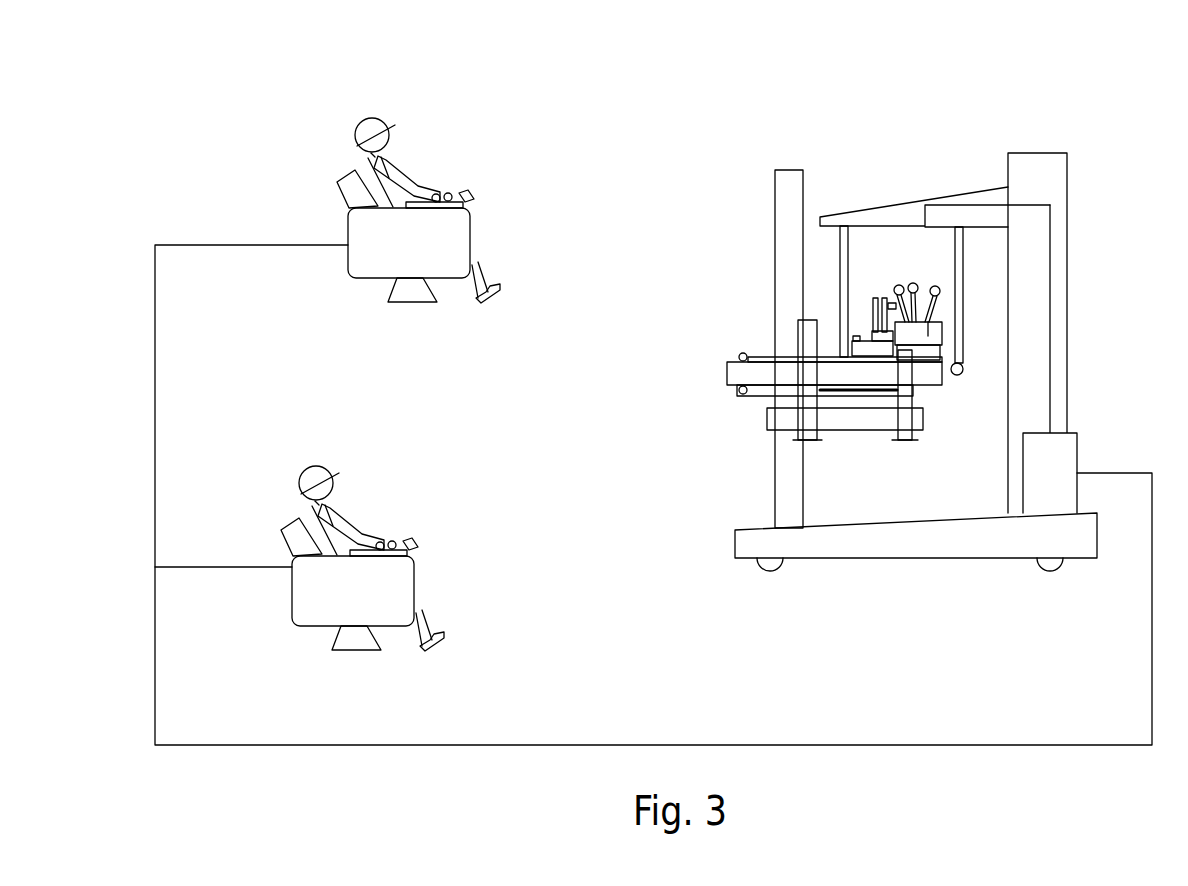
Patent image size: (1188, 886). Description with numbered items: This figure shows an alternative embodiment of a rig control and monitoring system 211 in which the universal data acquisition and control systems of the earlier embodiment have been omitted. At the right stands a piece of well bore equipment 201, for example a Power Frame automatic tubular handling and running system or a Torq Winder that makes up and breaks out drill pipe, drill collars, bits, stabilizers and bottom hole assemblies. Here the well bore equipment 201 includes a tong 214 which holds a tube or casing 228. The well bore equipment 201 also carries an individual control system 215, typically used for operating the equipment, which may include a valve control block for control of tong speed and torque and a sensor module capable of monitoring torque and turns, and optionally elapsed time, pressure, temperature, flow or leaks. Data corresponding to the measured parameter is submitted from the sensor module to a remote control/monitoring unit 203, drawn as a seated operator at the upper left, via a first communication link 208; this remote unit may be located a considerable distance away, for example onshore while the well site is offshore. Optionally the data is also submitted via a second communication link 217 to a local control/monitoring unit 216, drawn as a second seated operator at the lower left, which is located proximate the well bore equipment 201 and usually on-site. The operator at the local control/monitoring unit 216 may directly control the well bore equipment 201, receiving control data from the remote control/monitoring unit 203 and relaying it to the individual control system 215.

The rig control and monitoring system 211 is at (866, 62).
The piece of well bore equipment 201 is at (905, 163).
The remote control/monitoring unit 203 is at (465, 195).
The local control/monitoring unit 216 is at (402, 510).
The first communication link 208 is at (238, 245).
The second communication link 217 is at (212, 567).
The tong 214 is at (727, 371).
The individual control system 215 is at (1067, 275).
The tube or casing 228 is at (775, 270).